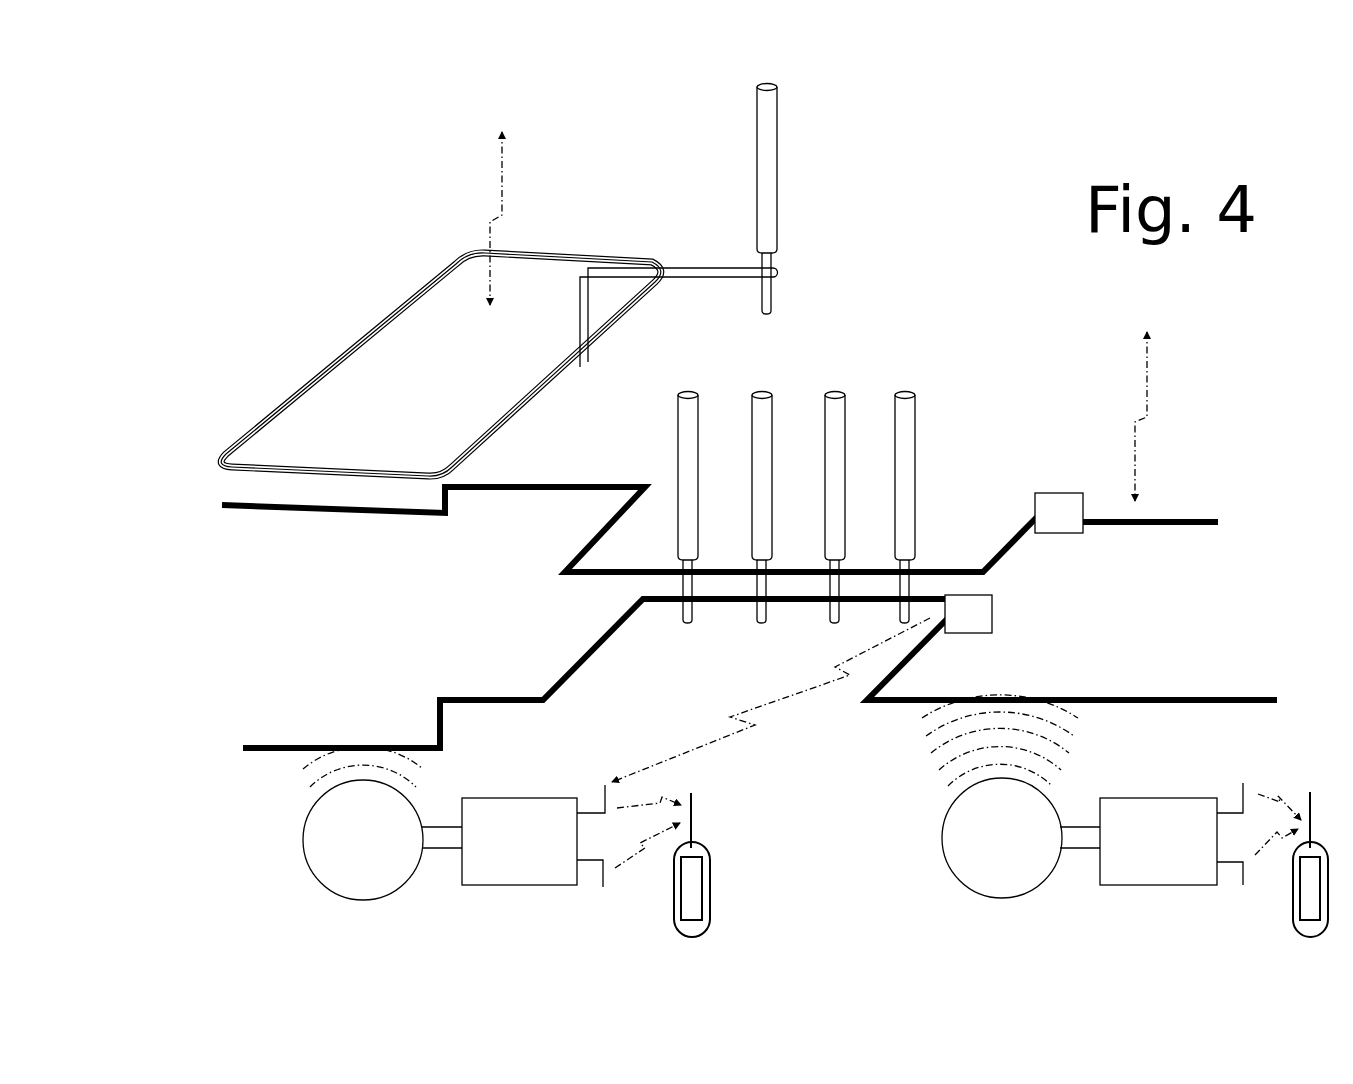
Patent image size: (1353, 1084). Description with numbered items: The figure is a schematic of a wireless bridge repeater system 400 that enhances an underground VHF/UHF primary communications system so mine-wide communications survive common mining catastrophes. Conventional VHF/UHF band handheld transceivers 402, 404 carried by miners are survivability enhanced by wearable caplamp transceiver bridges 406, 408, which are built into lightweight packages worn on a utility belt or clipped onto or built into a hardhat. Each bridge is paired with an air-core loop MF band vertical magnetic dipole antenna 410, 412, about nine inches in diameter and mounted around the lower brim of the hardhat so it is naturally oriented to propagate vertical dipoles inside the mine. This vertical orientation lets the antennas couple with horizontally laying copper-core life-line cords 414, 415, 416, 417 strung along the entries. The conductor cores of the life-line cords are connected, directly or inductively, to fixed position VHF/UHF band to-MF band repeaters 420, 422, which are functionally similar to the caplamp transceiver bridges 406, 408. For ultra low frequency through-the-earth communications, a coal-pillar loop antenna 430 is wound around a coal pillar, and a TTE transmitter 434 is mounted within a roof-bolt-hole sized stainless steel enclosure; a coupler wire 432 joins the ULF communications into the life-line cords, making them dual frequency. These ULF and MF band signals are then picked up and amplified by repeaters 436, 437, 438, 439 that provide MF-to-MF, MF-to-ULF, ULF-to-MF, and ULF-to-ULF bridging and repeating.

The wireless bridge repeater system 400 is at (1002, 220).
The VHF/UHF band handheld transceiver 402 is at (725, 851).
The VHF/UHF band handheld transceiver 404 is at (1293, 885).
The caplamp transceiver bridge 406 is at (560, 797).
The caplamp transceiver bridge 408 is at (1187, 797).
The MF band vertical magnetic dipole antenna 410 is at (305, 830).
The MF band vertical magnetic dipole antenna 412 is at (942, 835).
The life-line cord 414 is at (393, 513).
The life-line cord 415 is at (312, 745).
The life-line cord 416 is at (1145, 525).
The life-line cord 417 is at (1130, 700).
The VHF/UHF band to-MF band repeater 420 is at (1076, 493).
The VHF/UHF band to-MF band repeater 422 is at (995, 632).
The coal-pillar loop antenna 430 is at (372, 322).
The coupler wire 432 is at (699, 283).
The TTE transmitter 434 is at (779, 217).
The repeater 436 is at (702, 370).
The repeater 437 is at (768, 391).
The repeater 438 is at (838, 391).
The repeater 439 is at (900, 392).